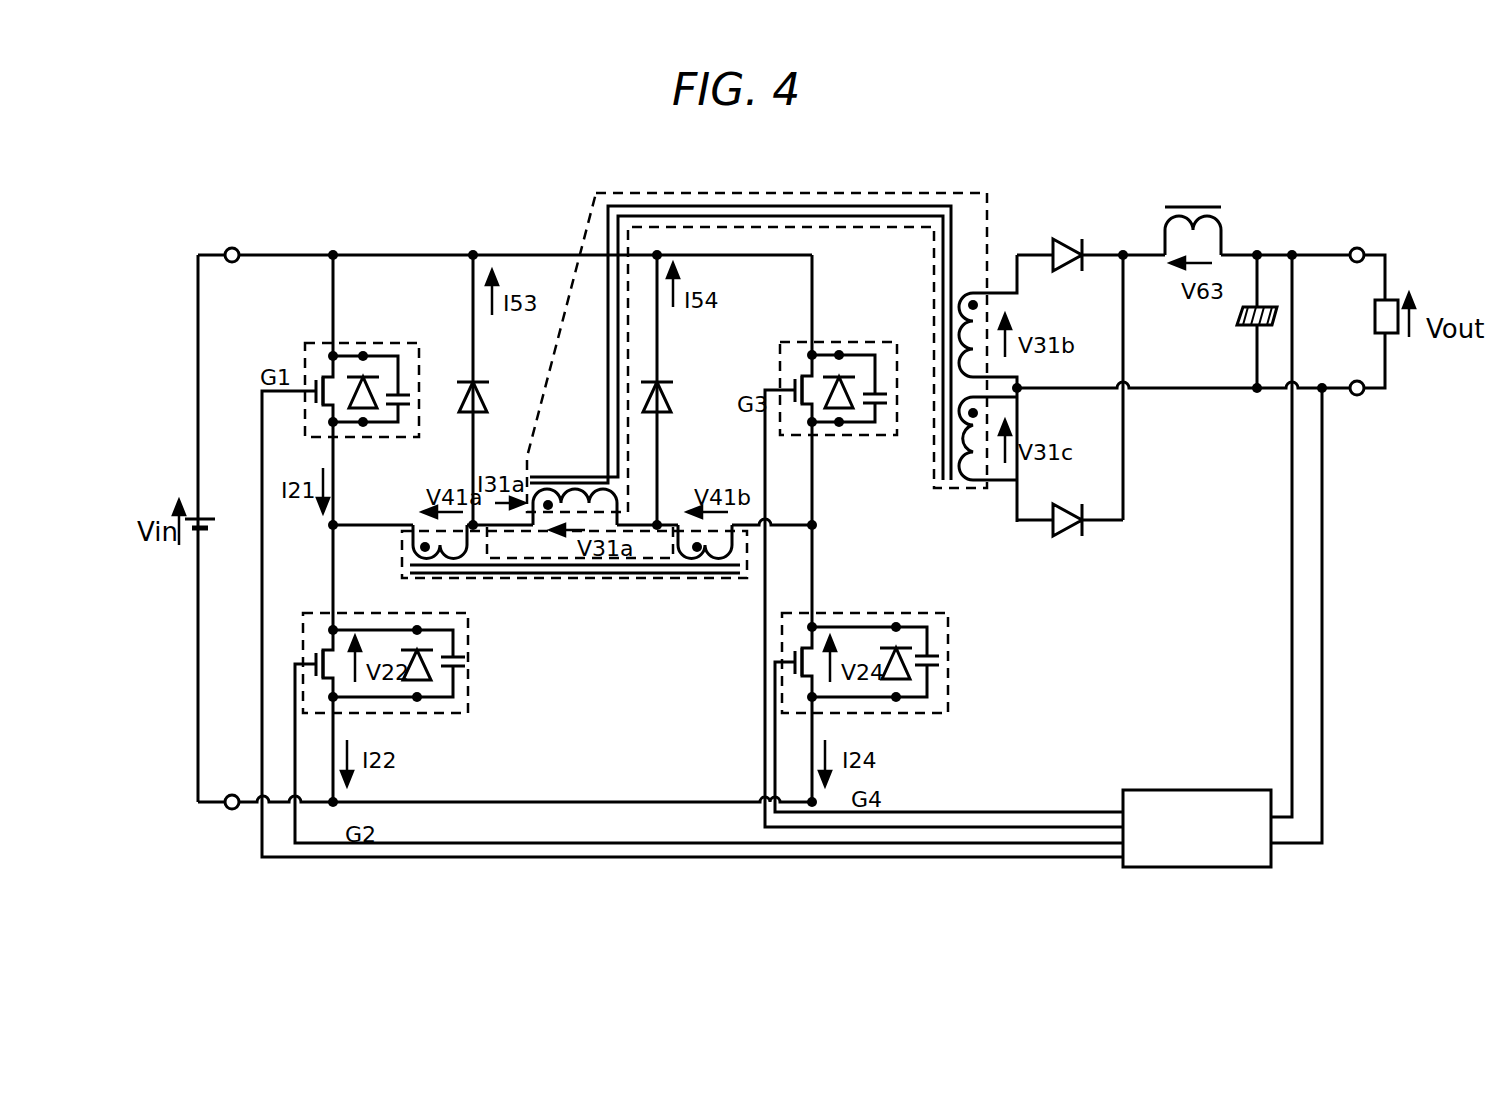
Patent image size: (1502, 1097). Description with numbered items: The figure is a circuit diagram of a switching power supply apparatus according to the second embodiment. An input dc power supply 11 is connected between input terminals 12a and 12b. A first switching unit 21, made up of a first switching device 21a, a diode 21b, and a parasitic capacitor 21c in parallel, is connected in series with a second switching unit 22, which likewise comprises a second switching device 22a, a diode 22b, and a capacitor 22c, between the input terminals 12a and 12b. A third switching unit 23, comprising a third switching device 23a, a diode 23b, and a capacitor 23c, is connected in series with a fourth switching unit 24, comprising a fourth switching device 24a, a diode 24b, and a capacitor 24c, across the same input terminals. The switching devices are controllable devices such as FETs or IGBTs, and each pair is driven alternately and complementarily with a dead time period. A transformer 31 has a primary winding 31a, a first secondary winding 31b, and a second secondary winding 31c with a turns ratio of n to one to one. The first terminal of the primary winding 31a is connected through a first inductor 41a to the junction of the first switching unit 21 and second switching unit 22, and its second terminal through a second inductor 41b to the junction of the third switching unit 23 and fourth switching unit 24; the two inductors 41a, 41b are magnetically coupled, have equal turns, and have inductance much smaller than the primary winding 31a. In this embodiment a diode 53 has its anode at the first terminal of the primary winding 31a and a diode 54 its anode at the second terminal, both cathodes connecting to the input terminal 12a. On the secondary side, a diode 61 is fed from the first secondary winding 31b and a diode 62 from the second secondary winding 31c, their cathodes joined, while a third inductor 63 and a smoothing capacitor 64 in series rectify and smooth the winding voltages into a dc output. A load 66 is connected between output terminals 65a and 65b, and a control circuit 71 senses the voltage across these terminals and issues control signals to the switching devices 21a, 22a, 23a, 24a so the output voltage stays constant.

The input dc power supply 11 is at (201, 517).
The input terminal 12a is at (232, 248).
The input terminal 12b is at (232, 810).
The first switching unit 21 is at (325, 340).
The first switching device 21a is at (320, 378).
The diode 21b is at (363, 372).
The capacitor 21c is at (403, 380).
The second switching unit 22 is at (385, 610).
The second switching device 22a is at (322, 650).
The diode 22b is at (420, 682).
The capacitor 22c is at (450, 652).
The third switching unit 23 is at (850, 340).
The third switching device 23a is at (805, 372).
The diode 23b is at (845, 425).
The capacitor 23c is at (880, 402).
The fourth switching unit 24 is at (858, 612).
The fourth switching device 24a is at (800, 680).
The diode 24b is at (900, 682).
The capacitor 24c is at (935, 652).
The transformer 31 is at (893, 228).
The primary winding 31a is at (592, 480).
The first secondary winding 31b is at (985, 300).
The second secondary winding 31c is at (975, 462).
The first inductor 41a is at (425, 535).
The second inductor 41b is at (722, 568).
The diode 53 is at (478, 388).
The diode 54 is at (660, 385).
The diode 61 is at (1082, 245).
The diode 62 is at (1090, 535).
The third inductor 63 is at (1225, 235).
The smoothing capacitor 64 is at (1247, 328).
The output terminal 65a is at (1360, 248).
The output terminal 65b is at (1360, 395).
The load 66 is at (1392, 298).
The control circuit 71 is at (1190, 790).